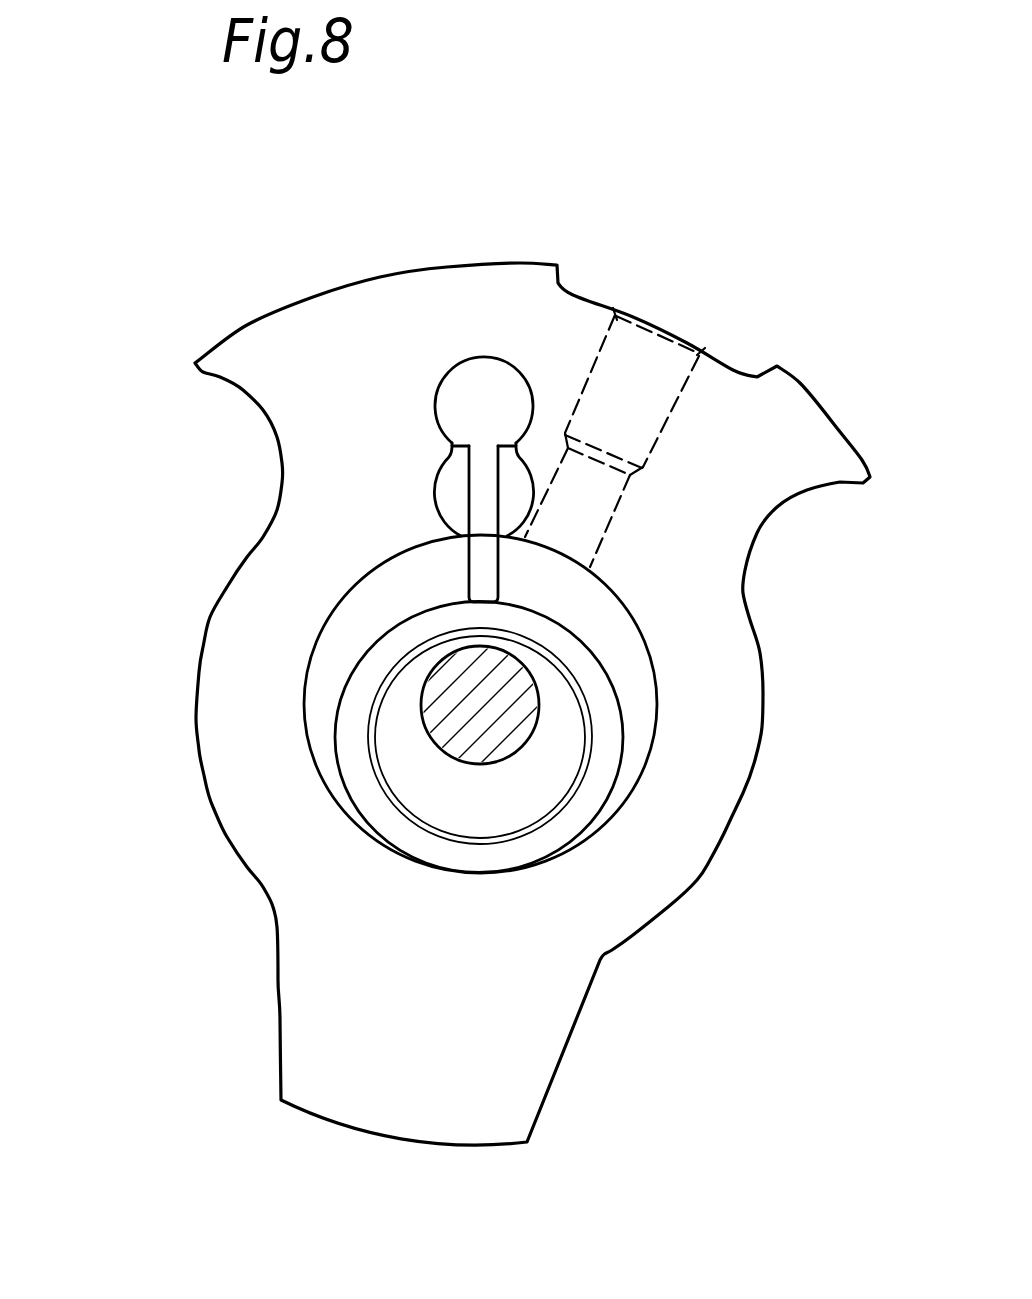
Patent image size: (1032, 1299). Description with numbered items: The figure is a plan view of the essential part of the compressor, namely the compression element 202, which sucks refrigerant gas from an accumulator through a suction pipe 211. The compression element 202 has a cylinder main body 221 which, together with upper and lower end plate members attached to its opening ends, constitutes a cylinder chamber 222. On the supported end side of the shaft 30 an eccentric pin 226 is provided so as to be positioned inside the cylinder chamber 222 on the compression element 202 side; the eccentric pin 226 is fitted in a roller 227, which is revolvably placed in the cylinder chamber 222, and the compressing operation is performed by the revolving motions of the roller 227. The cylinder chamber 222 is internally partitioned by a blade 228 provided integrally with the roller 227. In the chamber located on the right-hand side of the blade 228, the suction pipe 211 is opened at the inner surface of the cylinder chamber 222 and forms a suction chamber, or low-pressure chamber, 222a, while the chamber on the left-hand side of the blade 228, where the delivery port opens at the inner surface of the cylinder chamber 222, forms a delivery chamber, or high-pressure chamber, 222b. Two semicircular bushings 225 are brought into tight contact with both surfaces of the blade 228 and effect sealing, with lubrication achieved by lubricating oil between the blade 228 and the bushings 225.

The compression element 202 is at (238, 311).
The suction pipe 211 is at (663, 428).
The cylinder main body 221 is at (467, 287).
The cylinder chamber 222 is at (410, 567).
The suction chamber (low-pressure chamber) 222a is at (635, 738).
The delivery chamber (high-pressure chamber) 222b is at (320, 727).
The semicircular bushing 225 is at (448, 487).
The eccentric pin 226 is at (520, 812).
The roller 227 is at (580, 657).
The blade 228 is at (485, 578).
The shaft 30 is at (522, 728).